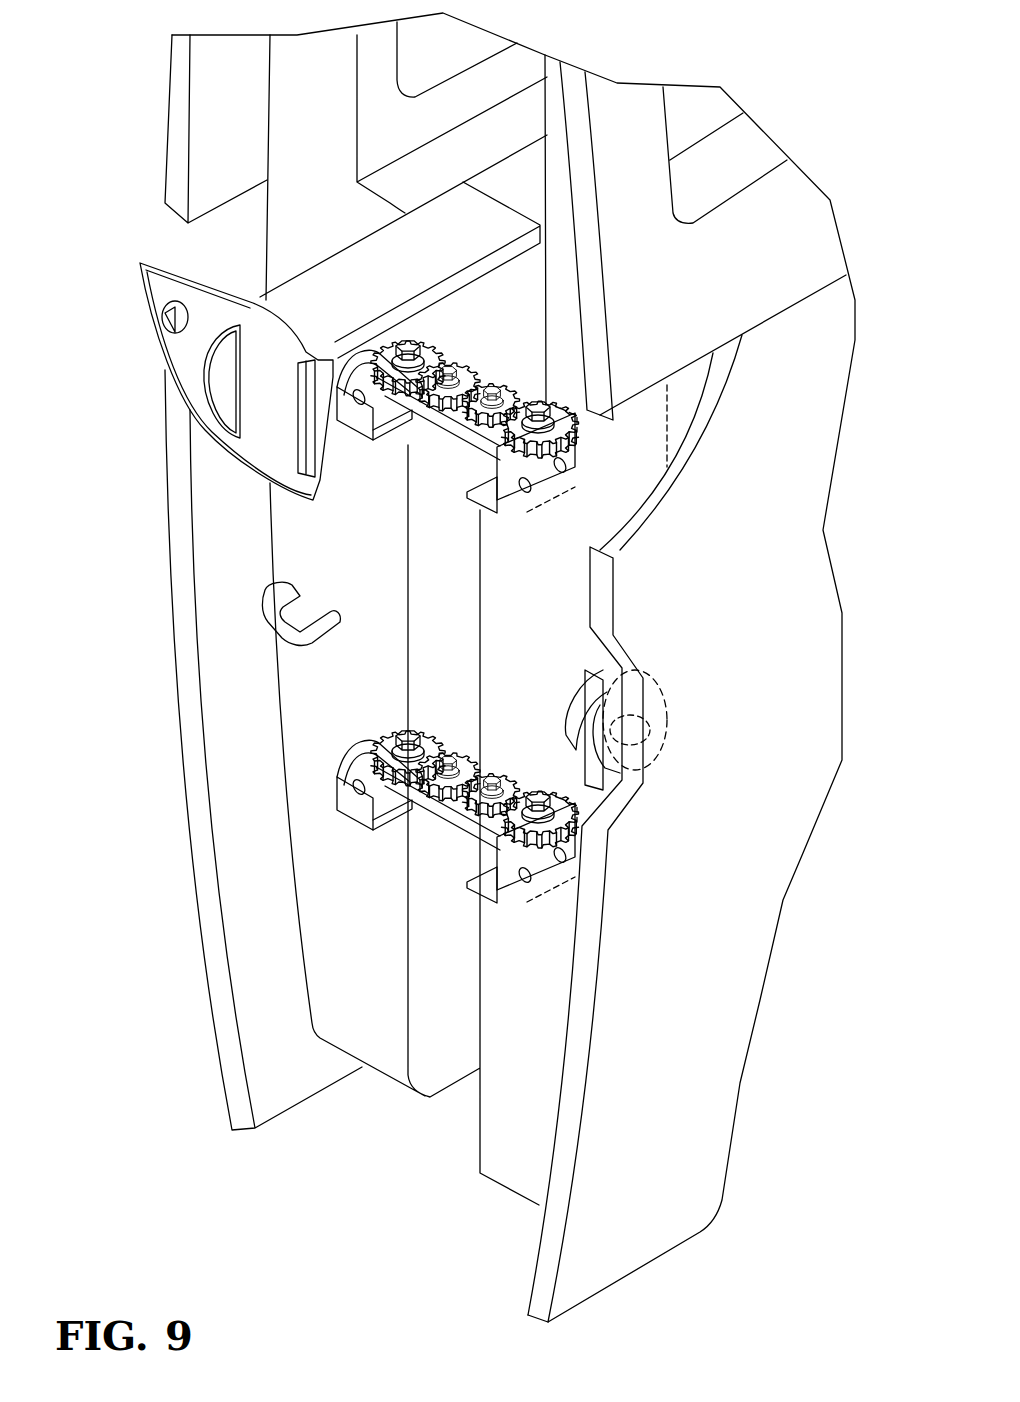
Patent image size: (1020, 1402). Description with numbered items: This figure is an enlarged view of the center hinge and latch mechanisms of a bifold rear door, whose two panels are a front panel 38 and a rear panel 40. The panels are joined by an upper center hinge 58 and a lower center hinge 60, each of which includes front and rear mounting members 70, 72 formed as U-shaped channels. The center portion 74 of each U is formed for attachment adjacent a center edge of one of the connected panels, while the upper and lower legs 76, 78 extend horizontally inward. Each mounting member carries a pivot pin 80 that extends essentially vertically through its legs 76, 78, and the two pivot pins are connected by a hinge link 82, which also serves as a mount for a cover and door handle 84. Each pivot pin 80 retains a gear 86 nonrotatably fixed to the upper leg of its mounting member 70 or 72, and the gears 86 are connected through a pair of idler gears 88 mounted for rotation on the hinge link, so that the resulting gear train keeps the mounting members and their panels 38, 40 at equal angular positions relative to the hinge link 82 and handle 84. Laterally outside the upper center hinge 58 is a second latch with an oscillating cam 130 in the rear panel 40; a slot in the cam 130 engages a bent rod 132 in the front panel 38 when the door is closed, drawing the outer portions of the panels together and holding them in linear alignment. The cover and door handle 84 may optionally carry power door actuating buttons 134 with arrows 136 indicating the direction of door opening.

The front panel 38 is at (270, 1033).
The rear panel 40 is at (513, 1073).
The upper center hinge 58 is at (573, 447).
The lower center hinge 60 is at (575, 832).
The front mounting member 70 is at (337, 800).
The rear mounting member 72 is at (582, 857).
The center portion 74 is at (573, 846).
The upper leg 76 is at (520, 840).
The lower leg 78 is at (477, 887).
The pivot pin 80 is at (537, 790).
The hinge link 82 is at (485, 812).
The cover and door handle 84 is at (180, 368).
The gear 86 is at (560, 415).
The idler gear 88 is at (458, 365).
The cam 130 is at (580, 713).
The bent rod 132 is at (267, 613).
The power door actuating buttons 134 is at (163, 313).
The arrows 136 is at (173, 307).